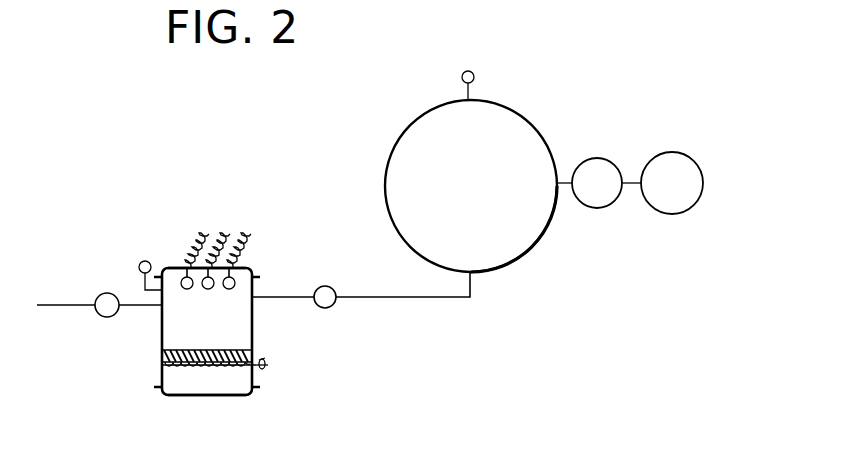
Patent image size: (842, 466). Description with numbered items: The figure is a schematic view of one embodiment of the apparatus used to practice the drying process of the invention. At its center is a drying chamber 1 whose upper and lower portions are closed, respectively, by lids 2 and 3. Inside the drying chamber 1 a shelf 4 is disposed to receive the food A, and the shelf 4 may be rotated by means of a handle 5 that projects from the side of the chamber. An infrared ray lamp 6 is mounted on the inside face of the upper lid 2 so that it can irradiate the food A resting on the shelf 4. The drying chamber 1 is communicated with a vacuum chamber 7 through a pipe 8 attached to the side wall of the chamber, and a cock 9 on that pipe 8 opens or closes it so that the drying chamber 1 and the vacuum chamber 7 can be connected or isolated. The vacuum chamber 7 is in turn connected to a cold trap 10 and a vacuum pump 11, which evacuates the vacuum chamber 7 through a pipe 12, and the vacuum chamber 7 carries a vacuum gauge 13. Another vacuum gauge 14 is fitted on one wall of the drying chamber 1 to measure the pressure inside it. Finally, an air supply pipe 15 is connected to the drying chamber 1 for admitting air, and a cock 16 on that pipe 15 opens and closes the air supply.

The drying chamber 1 is at (252, 333).
The lid 2 is at (253, 267).
The lid 3 is at (218, 396).
The shelf 4 is at (162, 362).
The handle 5 is at (266, 364).
The infrared ray lamp 6 is at (184, 277).
The vacuum chamber 7 is at (514, 258).
The pipe 8 is at (422, 298).
The cock 9 is at (325, 286).
The cold trap 10 is at (599, 158).
The vacuum pump 11 is at (672, 152).
The pipe 12 is at (630, 184).
The vacuum gauge 13 is at (474, 77).
The vacuum gauge 14 is at (145, 260).
The pipe 15 is at (62, 306).
The cock 16 is at (107, 293).
The food A is at (162, 352).